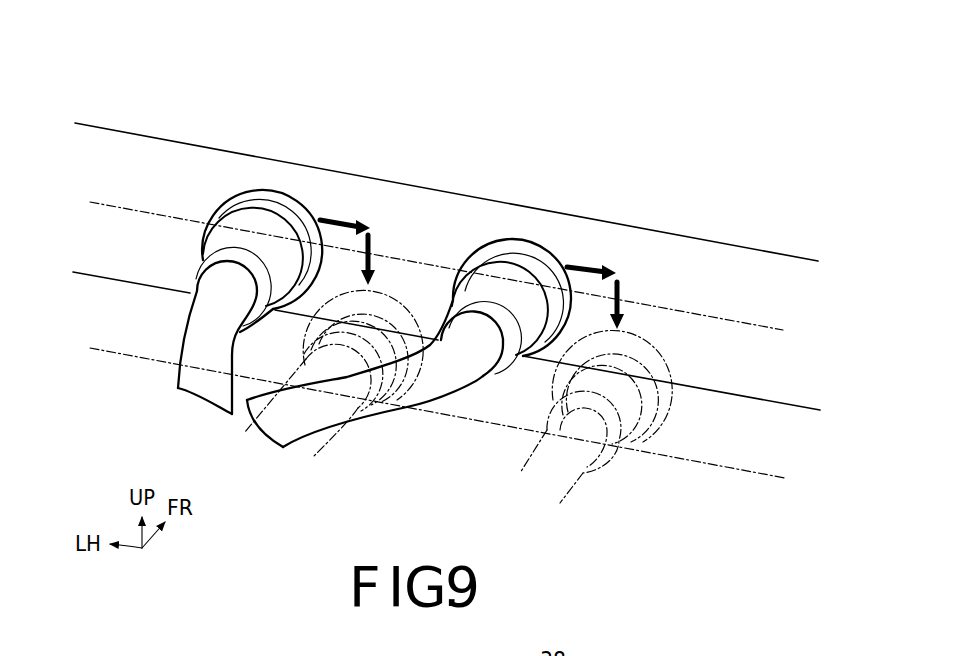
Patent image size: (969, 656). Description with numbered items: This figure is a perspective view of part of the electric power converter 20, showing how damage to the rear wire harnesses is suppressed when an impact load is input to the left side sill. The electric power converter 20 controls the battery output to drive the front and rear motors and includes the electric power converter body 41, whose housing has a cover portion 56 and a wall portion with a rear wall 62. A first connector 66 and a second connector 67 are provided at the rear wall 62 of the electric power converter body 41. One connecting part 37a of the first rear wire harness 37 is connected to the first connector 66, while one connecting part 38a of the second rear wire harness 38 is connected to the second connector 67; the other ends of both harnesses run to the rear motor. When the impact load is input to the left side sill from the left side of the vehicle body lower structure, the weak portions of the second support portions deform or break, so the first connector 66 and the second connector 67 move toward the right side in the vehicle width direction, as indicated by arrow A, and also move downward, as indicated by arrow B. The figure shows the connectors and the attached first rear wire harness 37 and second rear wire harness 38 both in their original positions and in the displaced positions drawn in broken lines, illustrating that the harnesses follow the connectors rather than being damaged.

The electric power converter 20 is at (424, 92).
The electric power converter body 41 is at (480, 128).
The cover portion 56 is at (533, 137).
The rear wall 62 is at (757, 367).
The first connector 66 is at (261, 200).
The second connector 67 is at (525, 247).
The first rear wire harness 37 is at (190, 328).
The one connecting part of the first rear wire harness 37a is at (243, 246).
The second rear wire harness 38 is at (440, 393).
The one connecting part of the second rear wire harness 38a is at (492, 281).
The arrow A is at (337, 213).
The arrow B is at (377, 247).